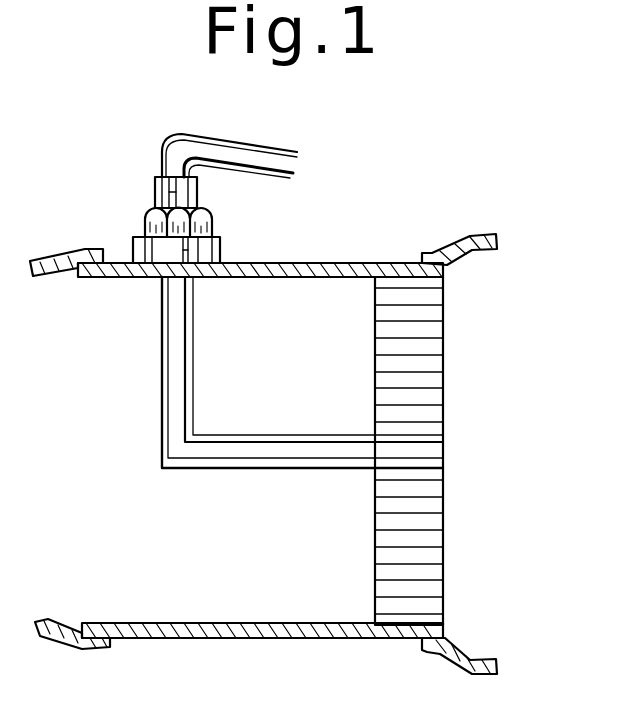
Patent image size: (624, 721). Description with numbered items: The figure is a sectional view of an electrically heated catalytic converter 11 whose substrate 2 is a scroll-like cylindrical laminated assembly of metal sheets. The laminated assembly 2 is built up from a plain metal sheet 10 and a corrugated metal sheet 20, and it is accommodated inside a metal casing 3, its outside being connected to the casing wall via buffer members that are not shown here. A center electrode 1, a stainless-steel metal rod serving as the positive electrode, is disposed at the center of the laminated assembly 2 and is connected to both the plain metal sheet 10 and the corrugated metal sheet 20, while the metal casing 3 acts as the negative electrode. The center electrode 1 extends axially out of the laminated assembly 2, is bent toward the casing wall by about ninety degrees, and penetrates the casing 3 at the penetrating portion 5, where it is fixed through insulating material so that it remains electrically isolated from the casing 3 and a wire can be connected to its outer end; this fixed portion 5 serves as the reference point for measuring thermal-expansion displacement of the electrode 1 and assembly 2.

The center electrode 1 is at (284, 457).
The substrate 2 is at (444, 522).
The metal casing 3 is at (327, 263).
The penetrating portion 5 is at (133, 248).
The plain metal sheet 10 is at (299, 627).
The corrugated metal sheet 20 is at (432, 618).
The electrically heated catalytic converter 11 is at (452, 189).